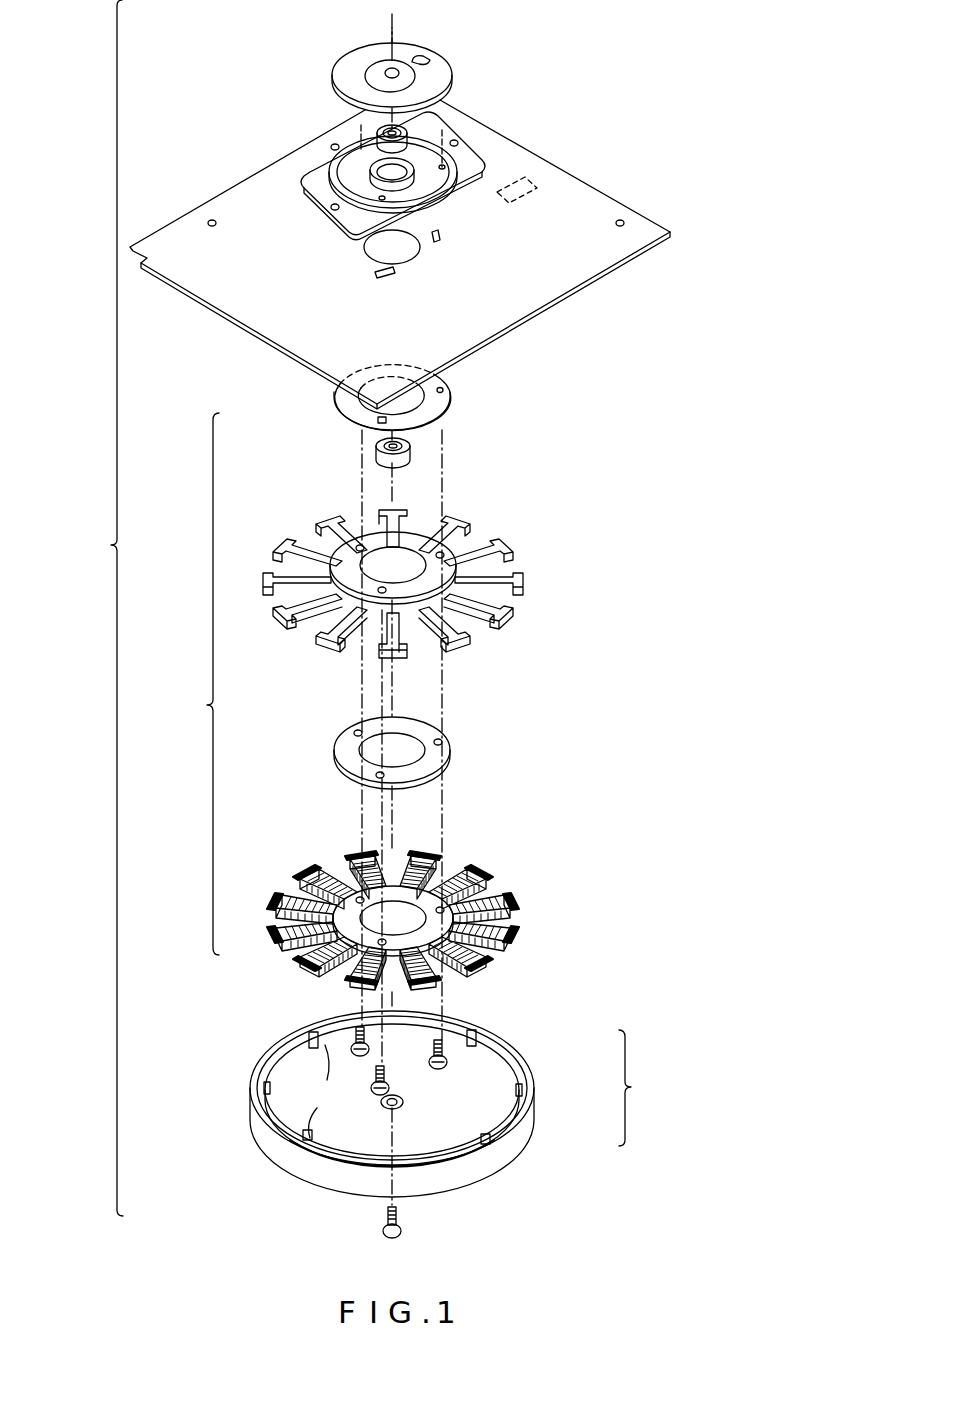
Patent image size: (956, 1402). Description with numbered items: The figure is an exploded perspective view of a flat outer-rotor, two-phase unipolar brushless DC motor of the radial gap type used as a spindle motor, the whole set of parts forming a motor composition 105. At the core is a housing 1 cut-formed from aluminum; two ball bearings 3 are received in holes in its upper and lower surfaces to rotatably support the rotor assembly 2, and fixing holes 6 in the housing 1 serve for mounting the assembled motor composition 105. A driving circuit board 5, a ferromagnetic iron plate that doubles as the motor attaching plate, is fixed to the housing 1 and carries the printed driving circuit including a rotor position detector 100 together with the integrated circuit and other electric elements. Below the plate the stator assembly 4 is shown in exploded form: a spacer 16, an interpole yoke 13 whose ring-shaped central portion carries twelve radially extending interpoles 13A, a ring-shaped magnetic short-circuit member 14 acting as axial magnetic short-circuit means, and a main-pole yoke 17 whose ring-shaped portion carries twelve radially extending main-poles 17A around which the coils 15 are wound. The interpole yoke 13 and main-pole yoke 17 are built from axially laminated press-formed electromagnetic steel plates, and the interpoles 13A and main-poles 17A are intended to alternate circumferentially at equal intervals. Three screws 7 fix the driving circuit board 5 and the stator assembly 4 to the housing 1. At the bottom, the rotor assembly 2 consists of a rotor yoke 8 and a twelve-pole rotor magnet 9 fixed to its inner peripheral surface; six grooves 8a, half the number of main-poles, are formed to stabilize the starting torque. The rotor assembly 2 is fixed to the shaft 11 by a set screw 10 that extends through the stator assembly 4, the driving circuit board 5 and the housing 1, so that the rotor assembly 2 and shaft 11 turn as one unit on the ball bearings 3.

The housing 1 is at (315, 172).
The rotor assembly 2 is at (637, 1088).
The ball bearings 3 is at (410, 133).
The stator assembly 4 is at (196, 684).
The driving circuit board 5 is at (235, 212).
The fixing holes 6 is at (458, 142).
The screws 7 is at (476, 1033).
The rotor yoke 8 is at (530, 1125).
The grooves 8a is at (356, 1091).
The rotor magnet 9 is at (527, 1067).
The set screw 10 is at (405, 1220).
The shaft 11 is at (388, 70).
The interpole yoke 13 is at (408, 538).
The interpoles 13A is at (331, 514).
The ring-shaped magnetic short-circuit member 14 is at (447, 755).
The coils 15 is at (455, 873).
The spacer 16 is at (452, 390).
The main-pole yoke 17 is at (300, 955).
The main-poles 17A is at (312, 860).
The rotor position detector 100 is at (515, 185).
The motor composition 105 is at (90, 608).